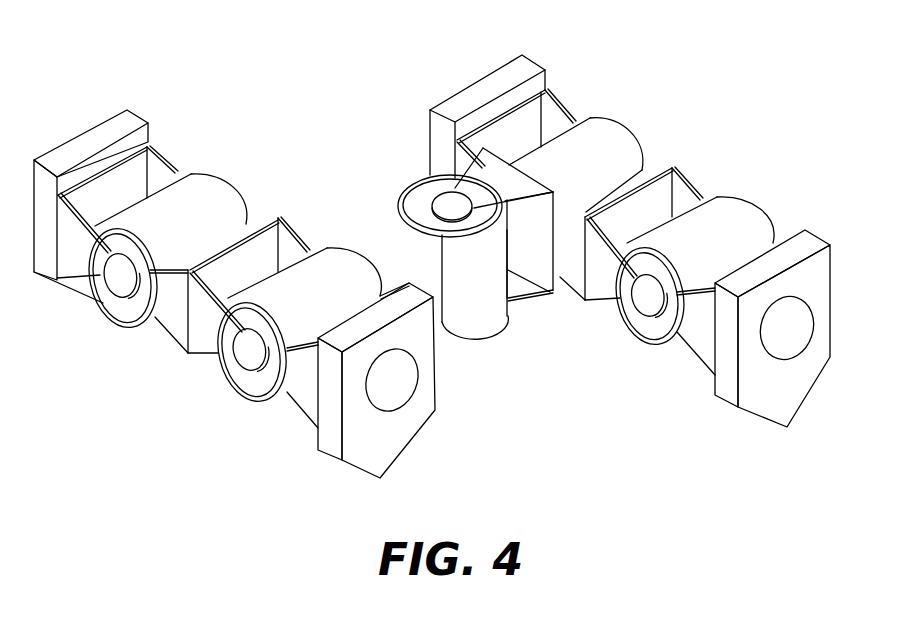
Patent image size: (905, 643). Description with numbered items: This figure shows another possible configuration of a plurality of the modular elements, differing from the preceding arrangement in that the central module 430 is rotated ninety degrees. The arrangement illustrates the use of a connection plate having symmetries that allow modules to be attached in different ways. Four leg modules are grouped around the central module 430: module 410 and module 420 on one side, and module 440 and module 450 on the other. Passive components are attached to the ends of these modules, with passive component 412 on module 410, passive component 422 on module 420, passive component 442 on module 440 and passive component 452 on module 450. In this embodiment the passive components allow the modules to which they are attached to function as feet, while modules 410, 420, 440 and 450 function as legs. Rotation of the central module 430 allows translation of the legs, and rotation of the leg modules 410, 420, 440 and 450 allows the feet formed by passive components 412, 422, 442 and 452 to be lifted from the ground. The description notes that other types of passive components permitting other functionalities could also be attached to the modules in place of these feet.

The module 410 is at (167, 220).
The passive component 412 is at (127, 117).
The module 420 is at (336, 347).
The passive component 422 is at (413, 418).
The module 430 is at (405, 172).
The module 440 is at (567, 129).
The passive component 442 is at (497, 78).
The module 450 is at (695, 301).
The passive component 452 is at (758, 408).